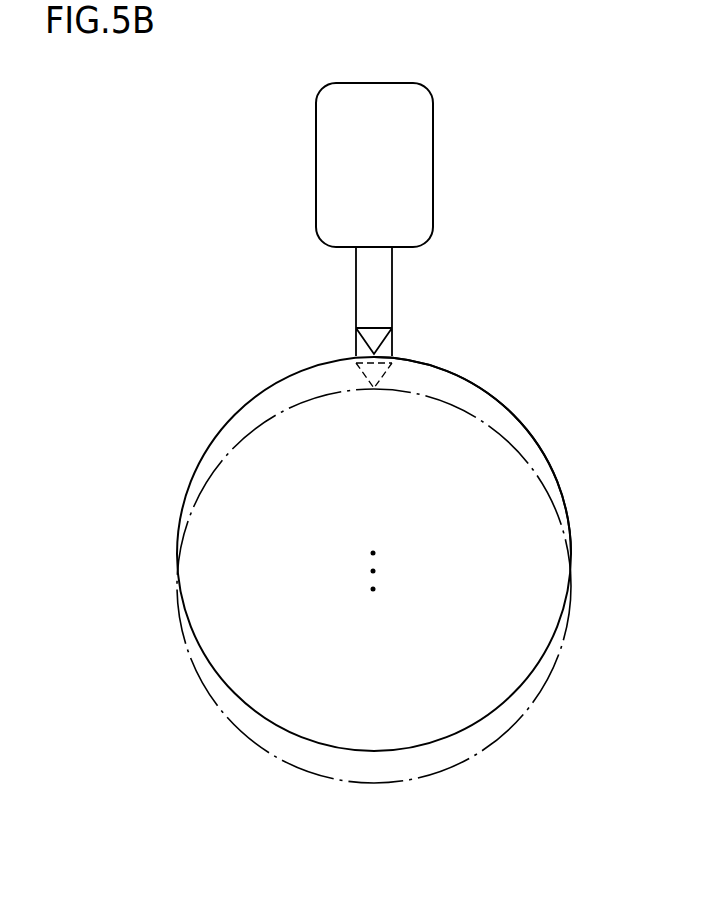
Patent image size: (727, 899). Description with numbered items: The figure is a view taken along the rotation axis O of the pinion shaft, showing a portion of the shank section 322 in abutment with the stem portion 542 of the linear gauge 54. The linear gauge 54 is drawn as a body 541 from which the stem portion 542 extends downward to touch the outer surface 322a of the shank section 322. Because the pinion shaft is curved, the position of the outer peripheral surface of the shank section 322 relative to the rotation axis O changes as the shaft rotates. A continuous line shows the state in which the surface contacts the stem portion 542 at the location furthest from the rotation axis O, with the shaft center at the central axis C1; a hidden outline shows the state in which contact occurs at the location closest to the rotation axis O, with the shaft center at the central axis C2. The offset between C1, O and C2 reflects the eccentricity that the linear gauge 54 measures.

The linear gauge 54 is at (437, 235).
The pressing body 541 is at (433, 196).
The stem portion 542 is at (407, 269).
The shank section 322 is at (280, 392).
The outer peripheral surface of roller 322a is at (482, 385).
The central axis of the pinion shaft in the continuous-line state C1 is at (373, 553).
The rotation axis O is at (373, 571).
The central axis of the pinion shaft in the hidden-outline state C2 is at (373, 589).